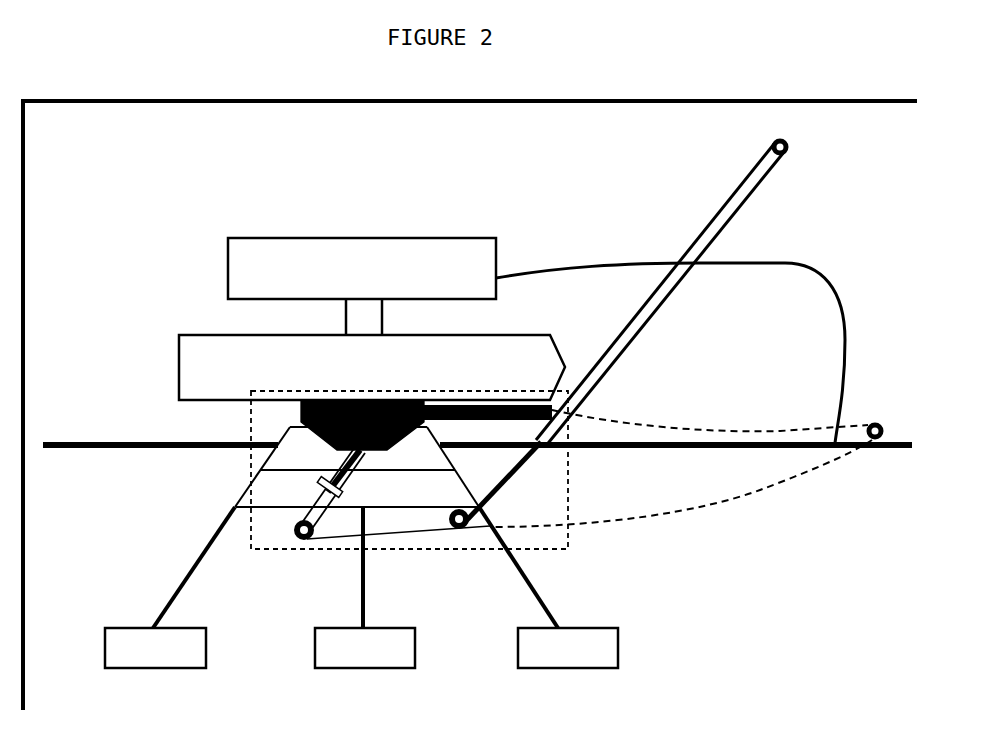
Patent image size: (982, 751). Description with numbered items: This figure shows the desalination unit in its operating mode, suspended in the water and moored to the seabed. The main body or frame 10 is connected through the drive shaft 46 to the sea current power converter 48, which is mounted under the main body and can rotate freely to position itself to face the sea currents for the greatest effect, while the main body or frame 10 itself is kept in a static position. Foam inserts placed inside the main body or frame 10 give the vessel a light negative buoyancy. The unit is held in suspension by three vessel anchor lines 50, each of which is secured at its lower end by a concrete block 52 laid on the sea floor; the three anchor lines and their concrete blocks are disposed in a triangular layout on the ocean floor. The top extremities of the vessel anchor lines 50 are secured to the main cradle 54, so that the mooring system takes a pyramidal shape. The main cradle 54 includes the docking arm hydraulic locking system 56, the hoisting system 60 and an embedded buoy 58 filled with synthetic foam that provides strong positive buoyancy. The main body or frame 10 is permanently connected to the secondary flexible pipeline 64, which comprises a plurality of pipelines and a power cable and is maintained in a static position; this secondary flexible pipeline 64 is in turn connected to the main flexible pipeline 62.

The main body or frame 10 is at (376, 280).
The drive shaft 46 is at (367, 318).
The sea current power converter 48 is at (376, 370).
The vessel anchor lines 50 is at (190, 571).
The concrete block 52 is at (152, 659).
The main cradle 54 is at (298, 447).
The docking arm hydraulic locking system 56 is at (318, 481).
The embedded buoy 58 is at (390, 493).
The hoisting system 60 is at (571, 497).
The main flexible pipeline 62 is at (105, 449).
The secondary flexible pipeline 64 is at (840, 323).